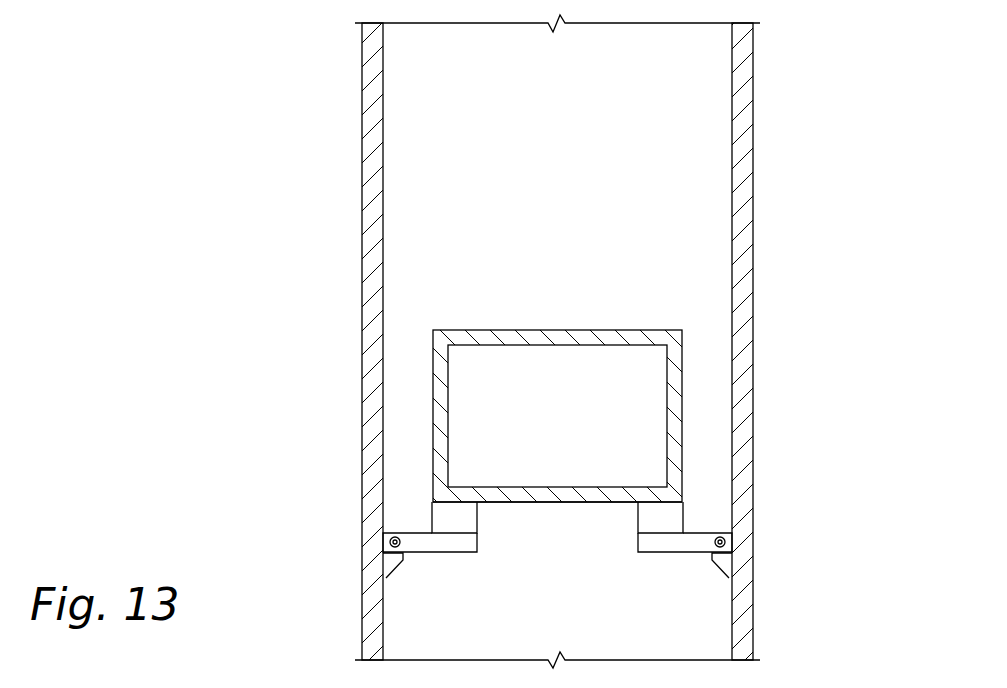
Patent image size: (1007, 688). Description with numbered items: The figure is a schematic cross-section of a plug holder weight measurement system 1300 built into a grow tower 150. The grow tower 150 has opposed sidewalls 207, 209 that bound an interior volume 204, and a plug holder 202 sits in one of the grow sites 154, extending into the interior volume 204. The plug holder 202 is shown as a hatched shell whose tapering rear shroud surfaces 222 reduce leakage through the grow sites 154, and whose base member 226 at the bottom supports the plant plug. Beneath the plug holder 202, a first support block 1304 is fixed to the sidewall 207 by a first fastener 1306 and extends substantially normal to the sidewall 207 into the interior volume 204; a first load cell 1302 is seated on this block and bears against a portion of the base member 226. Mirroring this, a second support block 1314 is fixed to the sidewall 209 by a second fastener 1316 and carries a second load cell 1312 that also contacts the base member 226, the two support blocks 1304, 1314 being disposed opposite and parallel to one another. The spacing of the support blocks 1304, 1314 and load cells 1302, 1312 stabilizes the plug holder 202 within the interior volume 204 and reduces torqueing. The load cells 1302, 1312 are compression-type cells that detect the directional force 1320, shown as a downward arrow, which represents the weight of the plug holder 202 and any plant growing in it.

The grow tower 150 is at (577, 338).
The grow sites 154 is at (480, 303).
The plug holder 202 is at (576, 422).
The interior volume 204 is at (576, 116).
The sidewall 207 is at (362, 450).
The sidewall 209 is at (753, 444).
The surfaces 222 is at (600, 330).
The base member 226 is at (566, 504).
The plug holder weight measurement system 1300 is at (170, 504).
The first load cell 1302 is at (467, 513).
The first support block 1304 is at (450, 545).
The first fastener 1306 is at (384, 541).
The second load cell 1312 is at (648, 513).
The second support block 1314 is at (652, 545).
The second fastener 1316 is at (731, 541).
The directional force 1320 is at (557, 294).